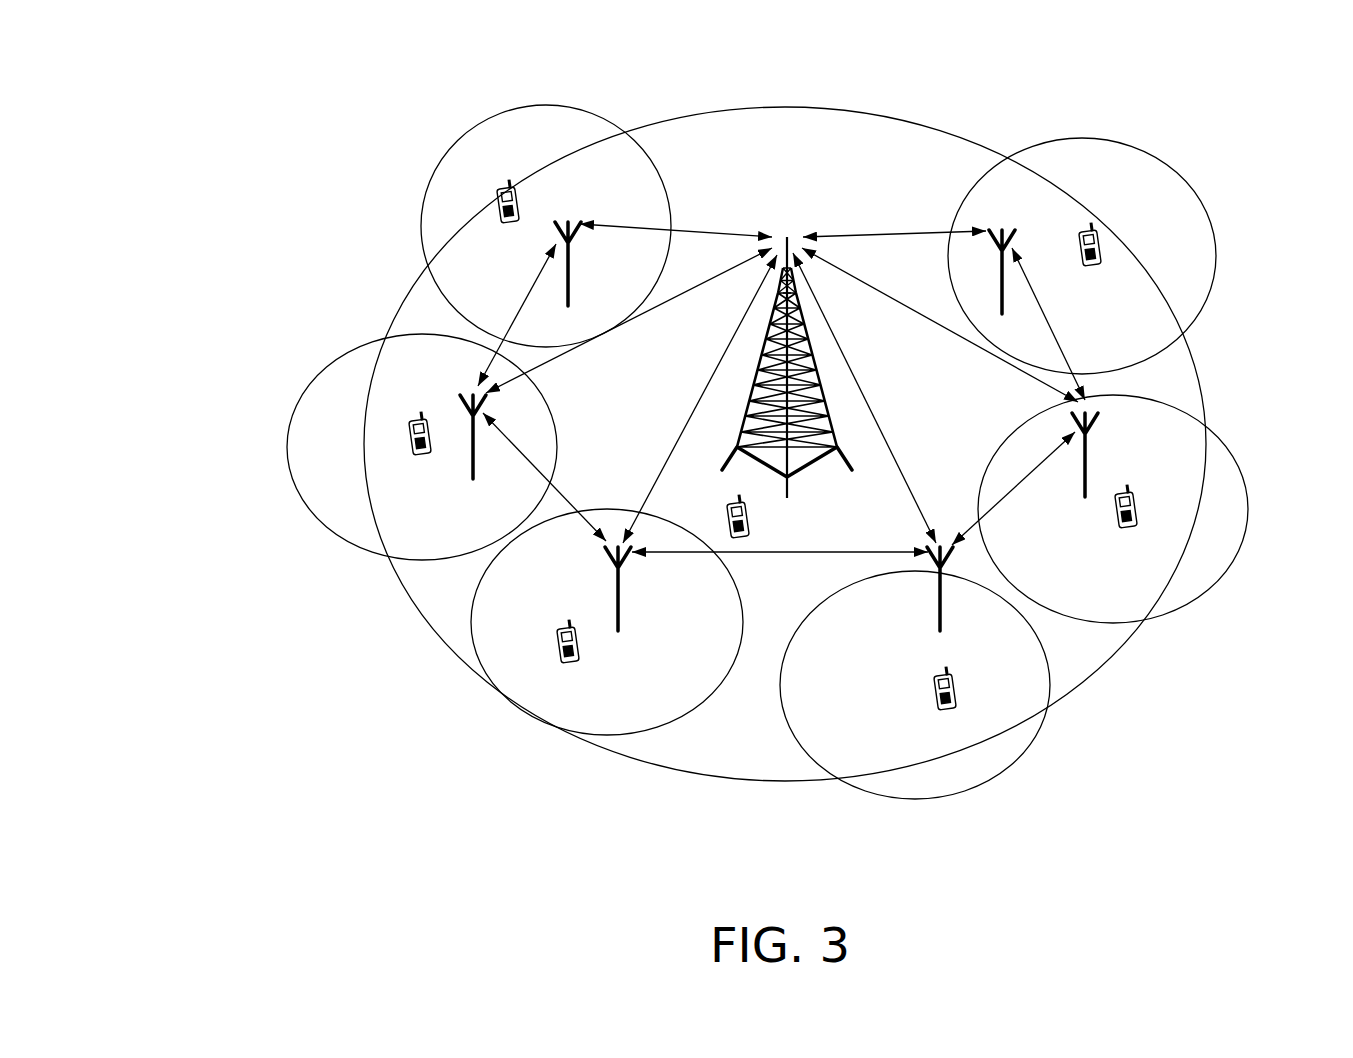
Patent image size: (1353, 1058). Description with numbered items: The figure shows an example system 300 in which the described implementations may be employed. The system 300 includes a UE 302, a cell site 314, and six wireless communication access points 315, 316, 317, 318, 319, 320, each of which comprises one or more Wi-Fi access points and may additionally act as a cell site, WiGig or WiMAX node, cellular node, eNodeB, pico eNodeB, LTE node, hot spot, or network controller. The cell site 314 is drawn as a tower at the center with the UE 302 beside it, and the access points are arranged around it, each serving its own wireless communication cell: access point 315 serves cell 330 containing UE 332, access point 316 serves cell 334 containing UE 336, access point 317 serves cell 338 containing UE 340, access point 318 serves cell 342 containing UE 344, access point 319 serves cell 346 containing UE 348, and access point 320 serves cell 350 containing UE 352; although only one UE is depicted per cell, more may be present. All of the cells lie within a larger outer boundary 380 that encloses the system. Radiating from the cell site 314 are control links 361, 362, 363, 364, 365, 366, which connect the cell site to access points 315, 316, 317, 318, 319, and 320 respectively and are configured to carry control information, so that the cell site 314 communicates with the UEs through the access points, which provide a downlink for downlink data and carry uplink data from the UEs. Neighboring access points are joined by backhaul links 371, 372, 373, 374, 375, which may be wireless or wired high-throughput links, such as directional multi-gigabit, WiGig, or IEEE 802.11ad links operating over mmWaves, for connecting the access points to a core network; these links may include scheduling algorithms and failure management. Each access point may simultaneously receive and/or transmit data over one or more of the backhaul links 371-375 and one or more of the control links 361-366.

The system 300 is at (200, 104).
The UE 302 is at (750, 525).
The cell site 314 is at (737, 445).
The wireless communication access point 315 is at (572, 282).
The wireless communication access point 316 is at (478, 470).
The wireless communication access point 317 is at (620, 605).
The wireless communication access point 318 is at (938, 605).
The wireless communication access point 319 is at (1080, 475).
The wireless communication access point 320 is at (1000, 285).
The wireless communication cell 330 is at (420, 217).
The UE 332 is at (498, 215).
The wireless communication cell 334 is at (300, 500).
The UE 336 is at (420, 425).
The wireless communication cell 338 is at (520, 713).
The UE 340 is at (557, 632).
The wireless communication cell 342 is at (1040, 745).
The UE 344 is at (960, 698).
The wireless communication cell 346 is at (1250, 525).
The UE 348 is at (1120, 530).
The wireless communication cell 350 is at (1218, 243).
The UE 352 is at (1100, 262).
The control link 361 is at (725, 235).
The control link 362 is at (693, 288).
The control link 363 is at (692, 410).
The control link 364 is at (882, 428).
The control link 365 is at (873, 283).
The control link 366 is at (873, 233).
The backhaul link 371 is at (514, 322).
The backhaul link 372 is at (572, 500).
The backhaul link 373 is at (842, 550).
The backhaul link 374 is at (1030, 470).
The backhaul link 375 is at (1060, 345).
The macro coverage area 380 is at (708, 106).